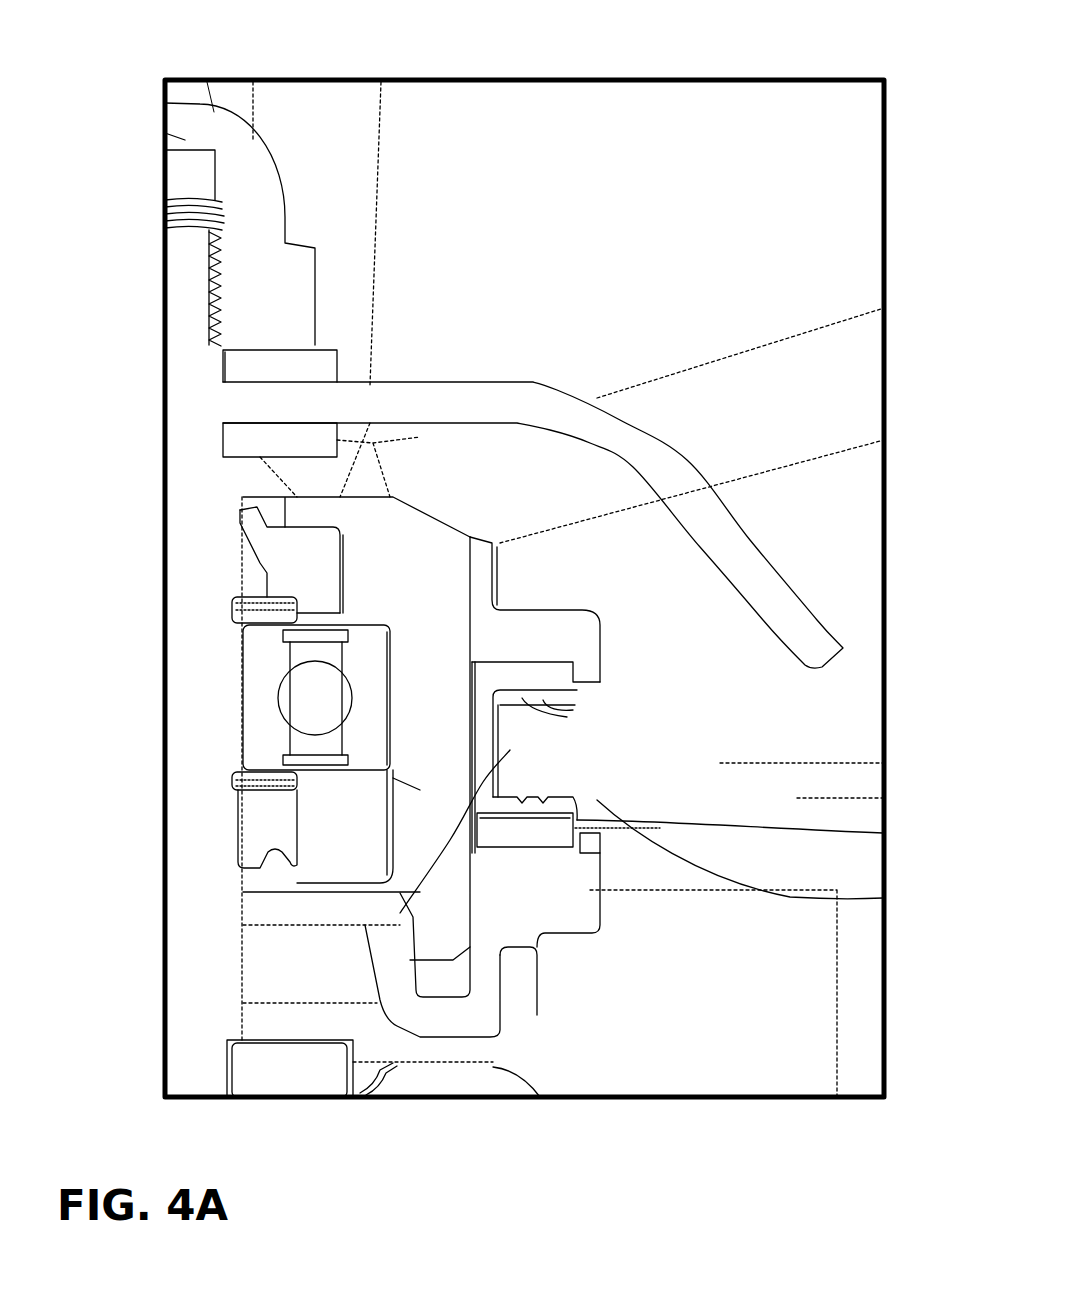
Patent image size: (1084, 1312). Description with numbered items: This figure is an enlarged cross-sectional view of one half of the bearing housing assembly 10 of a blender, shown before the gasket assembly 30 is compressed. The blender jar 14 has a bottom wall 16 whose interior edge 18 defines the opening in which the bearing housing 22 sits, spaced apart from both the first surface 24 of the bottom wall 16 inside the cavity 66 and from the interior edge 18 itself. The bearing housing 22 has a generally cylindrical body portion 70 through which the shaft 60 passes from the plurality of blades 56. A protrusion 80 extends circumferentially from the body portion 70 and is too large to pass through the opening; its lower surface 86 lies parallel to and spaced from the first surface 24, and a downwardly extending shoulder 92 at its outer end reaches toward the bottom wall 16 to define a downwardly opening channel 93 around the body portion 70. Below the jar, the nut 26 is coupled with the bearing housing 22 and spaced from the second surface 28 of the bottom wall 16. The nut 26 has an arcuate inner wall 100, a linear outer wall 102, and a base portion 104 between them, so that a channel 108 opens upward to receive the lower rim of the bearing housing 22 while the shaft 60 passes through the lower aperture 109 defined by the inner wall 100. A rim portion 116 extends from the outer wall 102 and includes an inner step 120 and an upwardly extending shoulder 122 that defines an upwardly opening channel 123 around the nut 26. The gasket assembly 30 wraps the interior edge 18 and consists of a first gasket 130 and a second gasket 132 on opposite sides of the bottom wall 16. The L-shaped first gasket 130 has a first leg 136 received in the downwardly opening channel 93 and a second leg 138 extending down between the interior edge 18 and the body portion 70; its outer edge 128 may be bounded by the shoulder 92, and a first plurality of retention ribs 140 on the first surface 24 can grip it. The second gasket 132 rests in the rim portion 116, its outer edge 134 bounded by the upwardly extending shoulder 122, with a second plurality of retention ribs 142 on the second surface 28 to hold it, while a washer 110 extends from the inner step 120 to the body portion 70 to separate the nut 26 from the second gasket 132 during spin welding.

The bearing housing assembly 10 is at (318, 56).
The blender jar 14 is at (827, 175).
The bottom wall 16 is at (752, 808).
The interior edge 18 is at (383, 963).
The bearing housing 22 is at (340, 512).
The first surface 24 is at (577, 690).
The nut 26 is at (420, 990).
The second surface 28 is at (547, 787).
The gasket assembly 30 is at (458, 775).
The plurality of blades 56 is at (440, 400).
The shaft 60 is at (188, 305).
The cavity 66 is at (668, 193).
The body portion 70 is at (418, 828).
The protrusion 80 is at (538, 628).
The lower surface 86 is at (553, 653).
The downwardly extending shoulder 92 is at (590, 668).
The downwardly opening channel 93 is at (518, 648).
The inner wall 100 is at (385, 962).
The outer wall 102 is at (517, 870).
The base portion 104 is at (440, 1027).
The channel 108 is at (457, 1002).
The lower aperture 109 is at (277, 927).
The washer 110 is at (597, 898).
The rim portion 116 is at (548, 940).
The inner step 120 is at (540, 852).
The upwardly extending shoulder 122 is at (590, 848).
The upwardly opening channel 123 is at (575, 885).
The outer edge 128 is at (603, 677).
The first gasket 130 is at (478, 696).
The second gasket 132 is at (605, 958).
The outer edge 134 is at (600, 840).
The first leg 136 is at (513, 672).
The second leg 138 is at (480, 735).
The first plurality of retention ribs 140 is at (607, 697).
The second plurality of retention ribs 142 is at (577, 705).